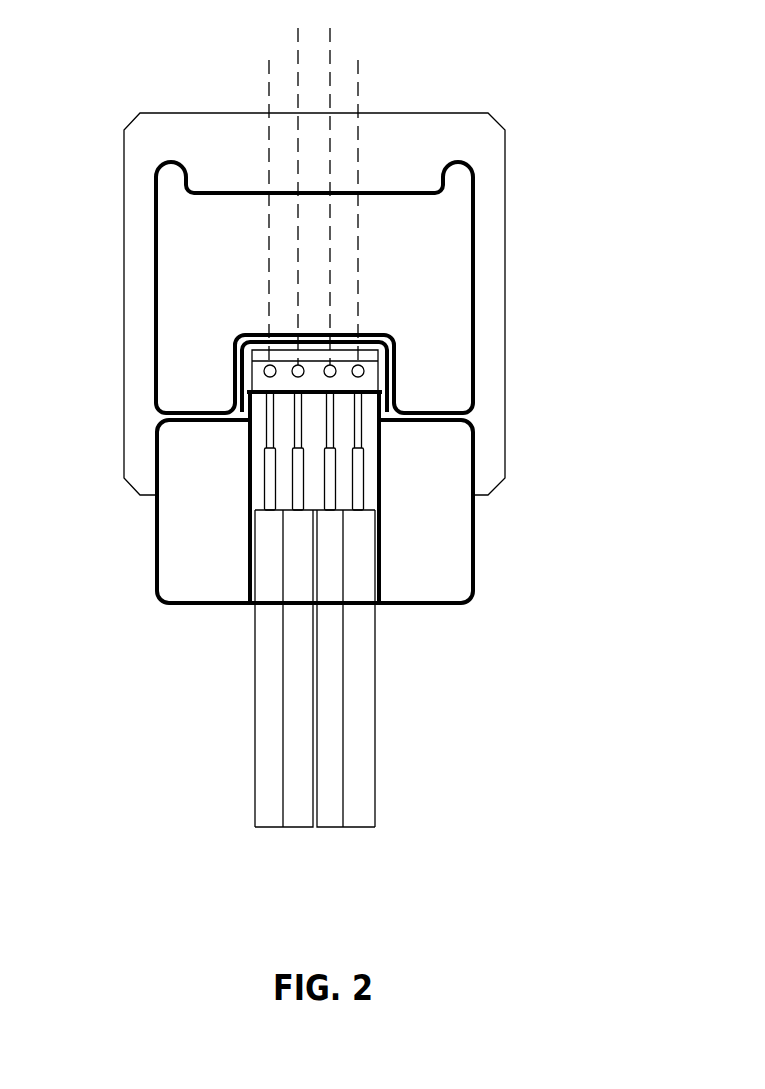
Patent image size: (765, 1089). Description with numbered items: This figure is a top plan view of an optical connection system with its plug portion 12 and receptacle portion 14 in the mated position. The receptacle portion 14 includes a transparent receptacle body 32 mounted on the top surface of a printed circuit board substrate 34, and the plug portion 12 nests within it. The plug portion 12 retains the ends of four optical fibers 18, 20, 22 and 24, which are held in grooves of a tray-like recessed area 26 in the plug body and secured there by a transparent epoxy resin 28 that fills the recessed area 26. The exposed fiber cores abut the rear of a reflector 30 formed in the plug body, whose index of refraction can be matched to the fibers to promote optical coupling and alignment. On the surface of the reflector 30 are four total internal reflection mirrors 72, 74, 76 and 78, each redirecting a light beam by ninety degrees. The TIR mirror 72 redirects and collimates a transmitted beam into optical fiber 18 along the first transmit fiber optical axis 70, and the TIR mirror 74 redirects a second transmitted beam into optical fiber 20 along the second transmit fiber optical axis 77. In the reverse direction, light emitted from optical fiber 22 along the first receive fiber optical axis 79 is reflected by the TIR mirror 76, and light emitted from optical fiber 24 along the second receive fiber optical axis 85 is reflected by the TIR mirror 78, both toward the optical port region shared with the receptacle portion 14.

The plug portion 12 is at (133, 556).
The receptacle portion 14 is at (308, 304).
The optical fiber 18 is at (255, 750).
The optical fiber 20 is at (295, 828).
The optical fiber 22 is at (335, 828).
The optical fiber 24 is at (373, 748).
The tray-like recessed area 26 is at (282, 472).
The epoxy resin 28 is at (253, 605).
The reflector 30 is at (342, 383).
The receptacle body 32 is at (473, 217).
The printed circuit board substrate 34 is at (505, 325).
The first transmit fiber optical axis 70 is at (268, 88).
The TIR mirror 72 is at (264, 375).
The TIR mirror 74 is at (297, 365).
The TIR mirror 76 is at (333, 363).
The second transmit fiber optical axis 77 is at (298, 43).
The TIR mirror 78 is at (365, 371).
The first receive fiber optical axis 79 is at (331, 43).
The second receive fiber optical axis 85 is at (359, 78).